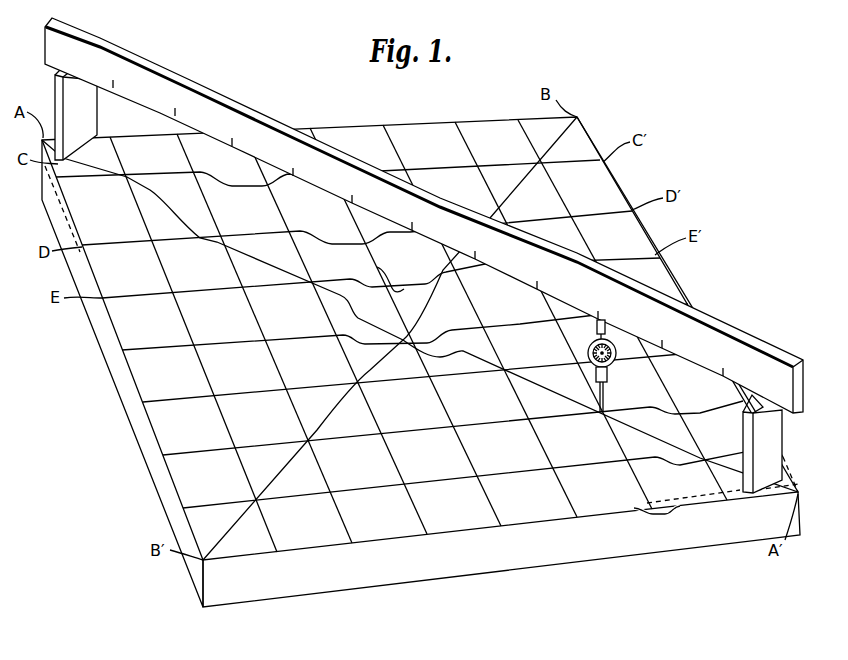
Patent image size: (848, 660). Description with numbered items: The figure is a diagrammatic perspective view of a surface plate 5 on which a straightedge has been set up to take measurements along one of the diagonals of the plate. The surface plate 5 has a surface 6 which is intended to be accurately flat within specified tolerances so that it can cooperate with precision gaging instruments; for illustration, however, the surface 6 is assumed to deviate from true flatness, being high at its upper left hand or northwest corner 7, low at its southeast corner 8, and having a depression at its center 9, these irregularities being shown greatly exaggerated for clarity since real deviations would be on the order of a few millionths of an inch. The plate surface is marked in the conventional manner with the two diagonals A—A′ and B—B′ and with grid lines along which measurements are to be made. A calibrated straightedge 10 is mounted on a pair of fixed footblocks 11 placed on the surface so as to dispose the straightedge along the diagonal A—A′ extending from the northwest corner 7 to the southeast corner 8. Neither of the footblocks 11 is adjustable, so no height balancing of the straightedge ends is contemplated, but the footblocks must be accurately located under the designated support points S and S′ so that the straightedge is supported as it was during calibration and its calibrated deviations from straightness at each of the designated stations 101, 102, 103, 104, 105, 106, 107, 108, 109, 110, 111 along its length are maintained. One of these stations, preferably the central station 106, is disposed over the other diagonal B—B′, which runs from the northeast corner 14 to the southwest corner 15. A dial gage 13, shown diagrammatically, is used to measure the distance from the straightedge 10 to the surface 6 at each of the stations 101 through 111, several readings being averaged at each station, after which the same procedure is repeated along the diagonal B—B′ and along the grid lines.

The surface plate 5 is at (651, 177).
The surface 6 is at (630, 228).
The northwest corner 7 is at (72, 196).
The southeast corner 8 is at (735, 492).
The center 9 is at (378, 268).
The calibrated straightedge 10 is at (424, 215).
The footblocks 11 is at (70, 104).
The dial gage 13 is at (587, 352).
The northeast corner 14 is at (583, 142).
The southwest corner 15 is at (240, 568).
The designated station 101 is at (115, 74).
The designated station 102 is at (177, 102).
The designated station 103 is at (234, 132).
The designated station 104 is at (295, 162).
The designated station 105 is at (354, 189).
The central station 106 is at (414, 216).
The designated station 107 is at (477, 245).
The designated station 108 is at (539, 275).
The designated station 109 is at (600, 305).
The designated station 110 is at (664, 334).
The designated station 111 is at (725, 362).